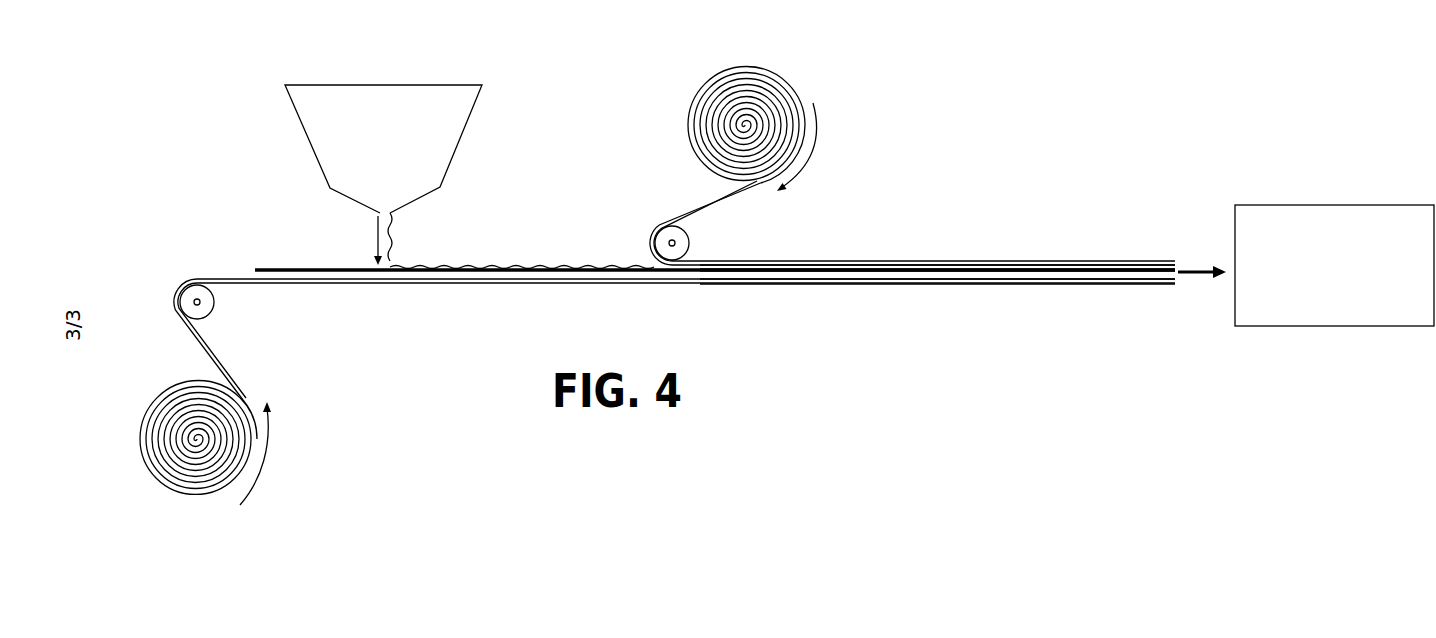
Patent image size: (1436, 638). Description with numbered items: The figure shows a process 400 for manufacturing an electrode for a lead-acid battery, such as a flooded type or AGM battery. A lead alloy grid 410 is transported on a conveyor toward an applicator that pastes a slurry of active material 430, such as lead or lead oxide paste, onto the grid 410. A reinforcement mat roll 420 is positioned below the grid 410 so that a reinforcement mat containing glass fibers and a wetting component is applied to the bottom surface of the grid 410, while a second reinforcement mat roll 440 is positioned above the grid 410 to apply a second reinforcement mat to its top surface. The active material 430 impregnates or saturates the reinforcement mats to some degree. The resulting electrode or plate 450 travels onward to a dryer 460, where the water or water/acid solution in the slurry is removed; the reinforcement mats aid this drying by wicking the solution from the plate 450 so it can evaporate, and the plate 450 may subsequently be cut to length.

The process 400 is at (1112, 176).
The lead alloy grid 410 is at (305, 268).
The reinforcement mat roll 420 is at (175, 503).
The active material 430 is at (467, 128).
The second reinforcement mat roll 440 is at (718, 208).
The electrode or plate 450 is at (983, 262).
The dryer 460 is at (1356, 182).